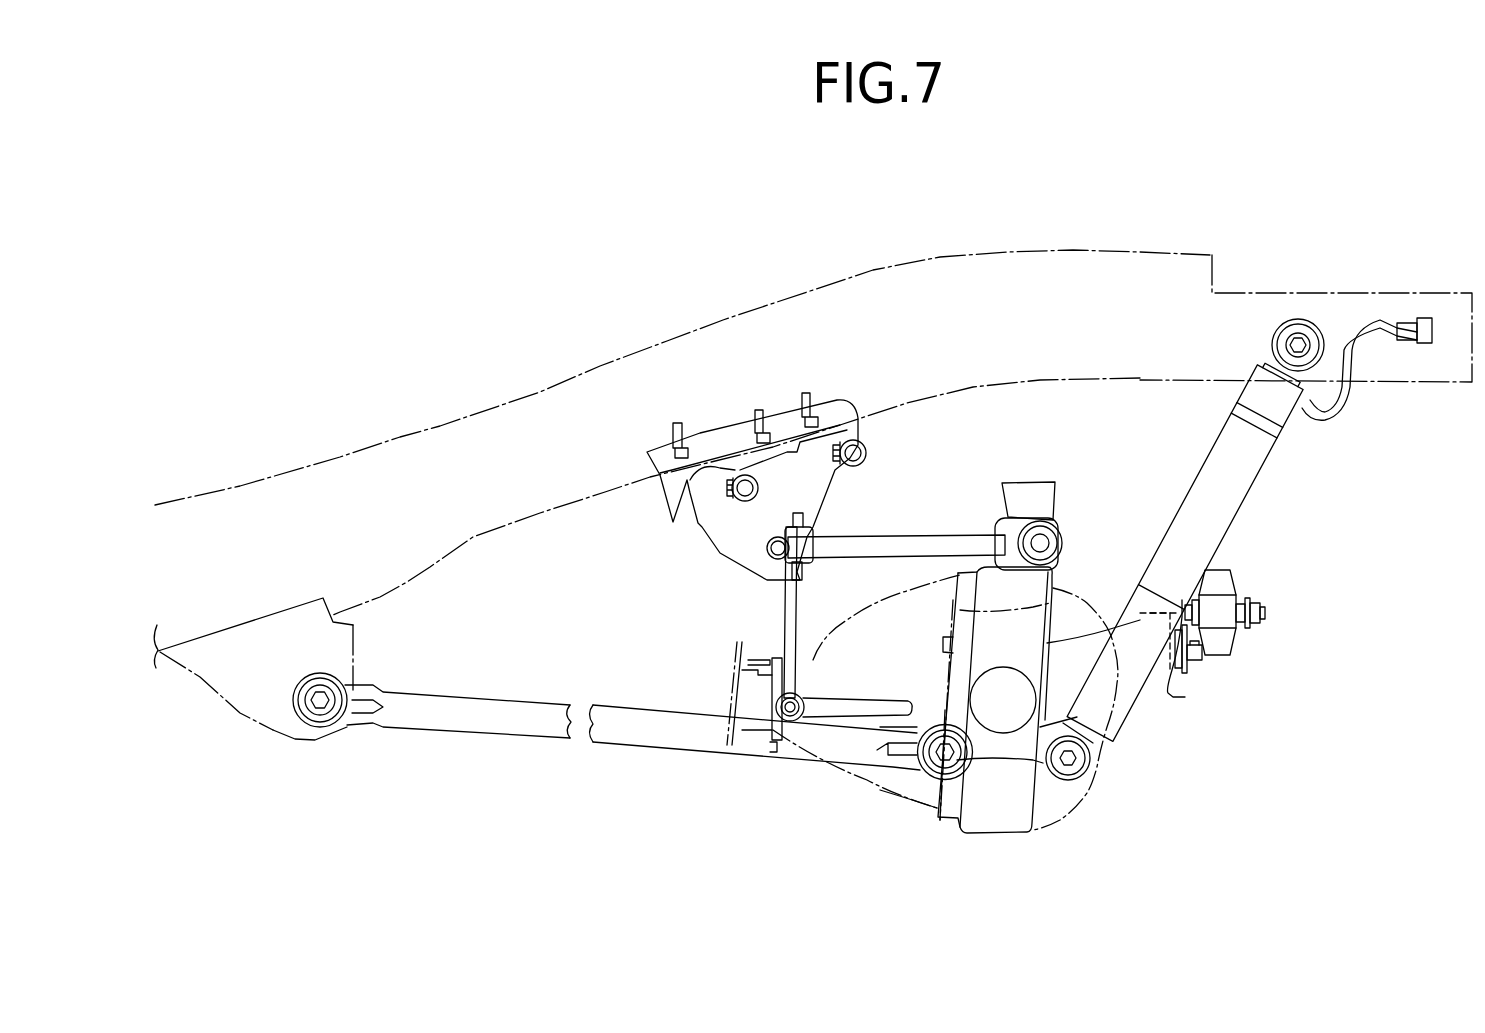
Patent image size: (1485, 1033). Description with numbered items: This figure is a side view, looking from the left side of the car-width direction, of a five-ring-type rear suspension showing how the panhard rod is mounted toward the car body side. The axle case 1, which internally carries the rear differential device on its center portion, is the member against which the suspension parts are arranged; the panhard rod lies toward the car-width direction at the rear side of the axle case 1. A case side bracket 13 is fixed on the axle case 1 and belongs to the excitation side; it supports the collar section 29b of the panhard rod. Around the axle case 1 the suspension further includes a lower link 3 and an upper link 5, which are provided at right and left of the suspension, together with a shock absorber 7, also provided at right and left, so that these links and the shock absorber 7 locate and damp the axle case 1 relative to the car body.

The axle case 1 is at (1097, 775).
The lower link 3 is at (656, 740).
The upper link 5 is at (905, 545).
The shock absorber 7 is at (1197, 493).
The case side bracket 13 is at (1137, 690).
The collar section 29b is at (1173, 697).